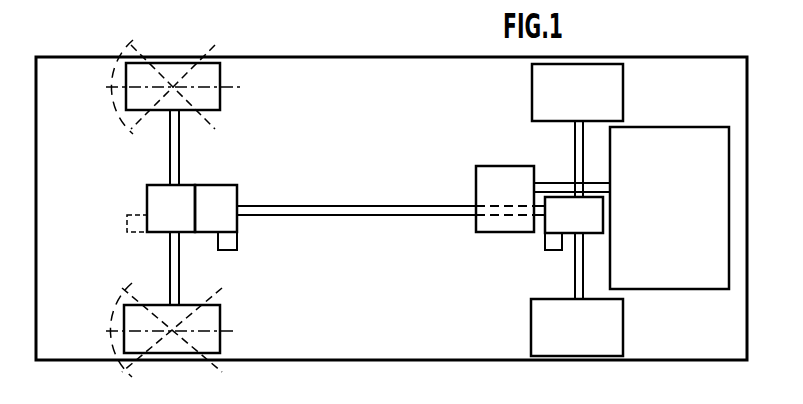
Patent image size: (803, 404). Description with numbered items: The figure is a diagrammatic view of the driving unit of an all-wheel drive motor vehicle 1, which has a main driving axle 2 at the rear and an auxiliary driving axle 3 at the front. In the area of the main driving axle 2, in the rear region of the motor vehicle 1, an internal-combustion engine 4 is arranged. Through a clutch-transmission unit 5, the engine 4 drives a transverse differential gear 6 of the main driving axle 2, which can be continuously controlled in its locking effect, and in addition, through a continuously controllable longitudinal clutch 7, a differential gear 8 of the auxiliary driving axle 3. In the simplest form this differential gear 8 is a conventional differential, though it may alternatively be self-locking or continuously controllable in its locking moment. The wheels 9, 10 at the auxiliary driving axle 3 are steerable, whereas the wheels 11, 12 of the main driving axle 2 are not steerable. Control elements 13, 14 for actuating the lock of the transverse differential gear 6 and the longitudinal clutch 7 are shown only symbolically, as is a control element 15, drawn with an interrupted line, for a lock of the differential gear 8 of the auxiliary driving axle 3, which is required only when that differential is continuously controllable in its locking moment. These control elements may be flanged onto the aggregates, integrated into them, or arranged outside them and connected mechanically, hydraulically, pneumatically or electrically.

The motor vehicle 1 is at (326, 56).
The main driving axle 2 is at (551, 142).
The auxiliary driving axle 3 is at (196, 139).
The internal-combustion engine 4 is at (674, 127).
The clutch-transmission unit 5 is at (491, 165).
The transverse differential gear 6 is at (547, 222).
The longitudinal clutch 7 is at (228, 184).
The differential gear 8 is at (154, 184).
The wheel 9 is at (220, 318).
The wheel 10 is at (220, 72).
The wheel 11 is at (531, 328).
The wheel 12 is at (532, 91).
The control element 13 is at (556, 252).
The control element 14 is at (229, 252).
The control element 15 is at (134, 237).